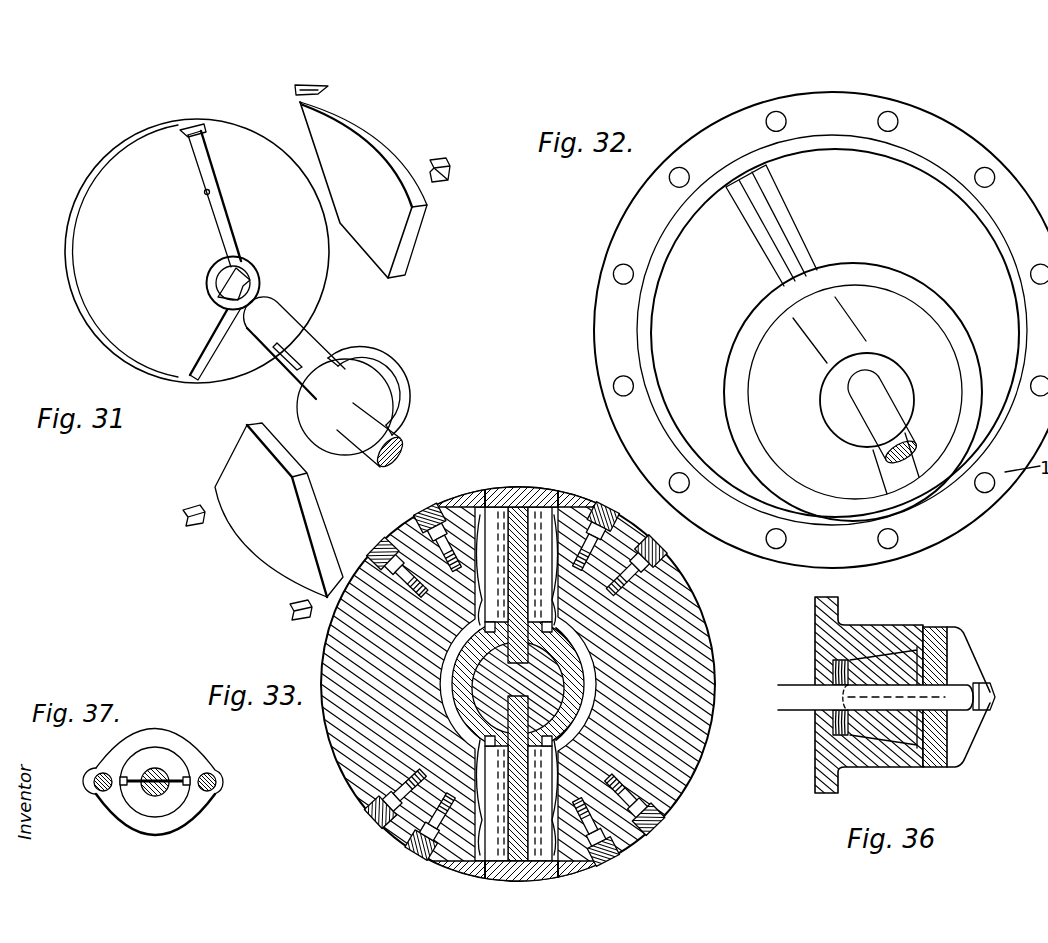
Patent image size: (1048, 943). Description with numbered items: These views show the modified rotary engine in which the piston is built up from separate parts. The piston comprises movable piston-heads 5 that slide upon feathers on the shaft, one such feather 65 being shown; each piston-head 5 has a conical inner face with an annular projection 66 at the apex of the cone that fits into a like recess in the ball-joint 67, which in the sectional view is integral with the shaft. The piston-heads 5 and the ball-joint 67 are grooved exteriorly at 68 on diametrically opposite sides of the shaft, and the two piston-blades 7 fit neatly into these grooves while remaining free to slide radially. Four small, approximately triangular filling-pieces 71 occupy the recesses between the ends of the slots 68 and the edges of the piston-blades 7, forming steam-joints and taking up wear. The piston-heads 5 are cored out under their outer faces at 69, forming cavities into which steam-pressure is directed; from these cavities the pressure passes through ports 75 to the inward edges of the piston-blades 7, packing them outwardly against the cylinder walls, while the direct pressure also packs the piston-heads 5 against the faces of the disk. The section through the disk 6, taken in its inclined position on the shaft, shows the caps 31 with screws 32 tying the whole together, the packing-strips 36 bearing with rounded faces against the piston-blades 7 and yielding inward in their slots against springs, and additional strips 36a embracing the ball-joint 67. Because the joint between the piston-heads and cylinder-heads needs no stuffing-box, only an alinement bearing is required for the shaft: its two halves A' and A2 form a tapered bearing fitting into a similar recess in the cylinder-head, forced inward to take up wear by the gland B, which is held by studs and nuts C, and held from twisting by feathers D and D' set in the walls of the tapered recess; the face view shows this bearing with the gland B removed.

In FIG. 31, the movable piston-heads 5 is at (197, 251).
In FIG. 32, the movable piston-heads 5 is at (737, 438).
In FIG. 31, the piston-blades 7 is at (321, 349).
In FIG. 32, the piston-blades 7 is at (777, 232).
In FIG. 31, the ports 75 is at (220, 190).
In FIG. 31, the grooves 68 is at (190, 140).
In FIG. 31, the annular projections 66 is at (260, 278).
In FIG. 31, the filling-pieces 71 is at (176, 521).
In FIG. 31, the feather 65 is at (292, 375).
In FIG. 31, the ball-joint 67 is at (378, 380).
In FIG. 32, the cavities 69 is at (853, 392).
In FIG. 33, the valve body 6 is at (688, 682).
In FIG. 33, the caps 31 is at (550, 512).
In FIG. 33, the screws 32 is at (447, 505).
In FIG. 33, the packing-strips 36 is at (496, 525).
In FIG. 33, the additional strips 36a is at (297, 750).
In FIG. 36, the tapered bearing half A' is at (875, 639).
In FIG. 36, the tapered bearing half A2 is at (890, 730).
In FIG. 36, the gland B is at (933, 643).
In FIG. 36, the stud and nut C is at (992, 697).
In FIG. 37, the stud and nut C is at (100, 768).
In FIG. 36, the feather D is at (966, 735).
In FIG. 37, the feather D is at (170, 760).
In FIG. 37, the stem bore A is at (153, 785).
In FIG. 37, the feather D' is at (86, 812).